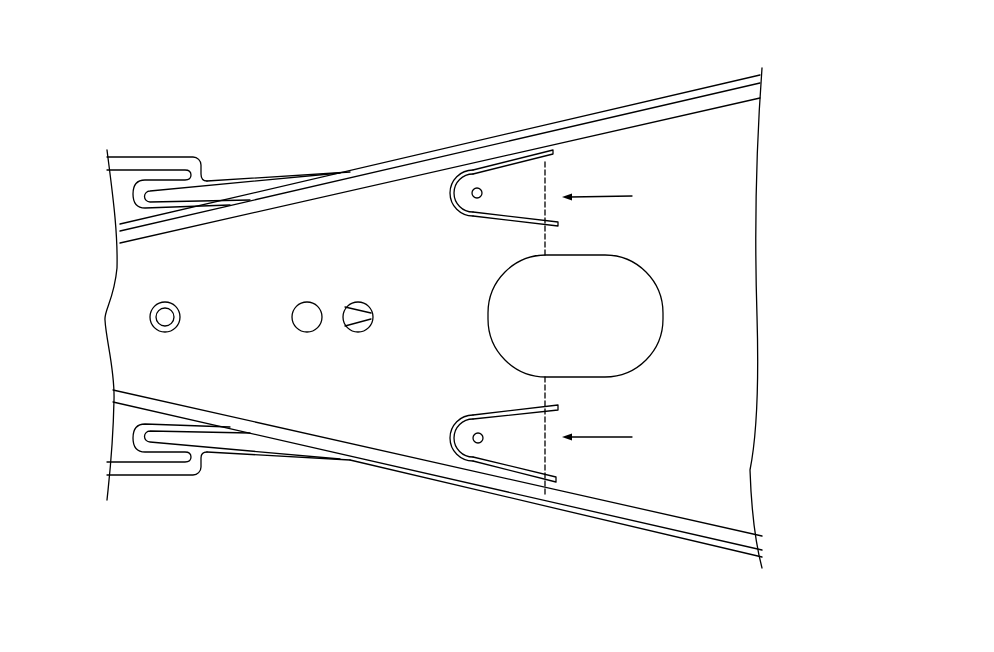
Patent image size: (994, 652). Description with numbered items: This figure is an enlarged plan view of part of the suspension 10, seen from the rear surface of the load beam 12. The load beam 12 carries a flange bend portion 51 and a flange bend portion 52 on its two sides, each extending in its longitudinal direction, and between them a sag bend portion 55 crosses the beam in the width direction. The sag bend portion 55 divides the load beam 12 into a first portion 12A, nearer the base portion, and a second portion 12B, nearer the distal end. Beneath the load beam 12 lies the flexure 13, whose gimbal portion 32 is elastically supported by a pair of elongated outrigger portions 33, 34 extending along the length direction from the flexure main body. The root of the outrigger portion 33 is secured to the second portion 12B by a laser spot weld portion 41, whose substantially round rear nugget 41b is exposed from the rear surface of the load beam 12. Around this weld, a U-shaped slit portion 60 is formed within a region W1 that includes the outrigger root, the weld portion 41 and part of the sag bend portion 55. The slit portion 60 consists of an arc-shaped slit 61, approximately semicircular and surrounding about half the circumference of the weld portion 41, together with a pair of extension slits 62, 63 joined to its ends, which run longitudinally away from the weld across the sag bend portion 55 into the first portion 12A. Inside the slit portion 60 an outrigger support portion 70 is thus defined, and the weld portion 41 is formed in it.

The suspension 10 is at (385, 79).
The load beam 12 is at (772, 232).
The first portion 12A is at (735, 139).
The second portion 12B is at (303, 235).
The flexure 13 is at (220, 178).
The gimbal portion 32 is at (155, 478).
The outrigger portion 33 is at (243, 455).
The outrigger portion 34 is at (247, 186).
The weld portion 41 is at (470, 190).
The rear nugget 41b is at (480, 188).
The flange bend portion 51 is at (624, 527).
The flange bend portion 52 is at (636, 103).
The sag bend portion 55 is at (546, 384).
The slit portion 60 is at (440, 198).
The arc-shaped slit 61 is at (454, 214).
The extension slit 62 is at (525, 155).
The extension slit 63 is at (497, 229).
The outrigger support portion 70 is at (530, 181).
The region W1 is at (616, 316).